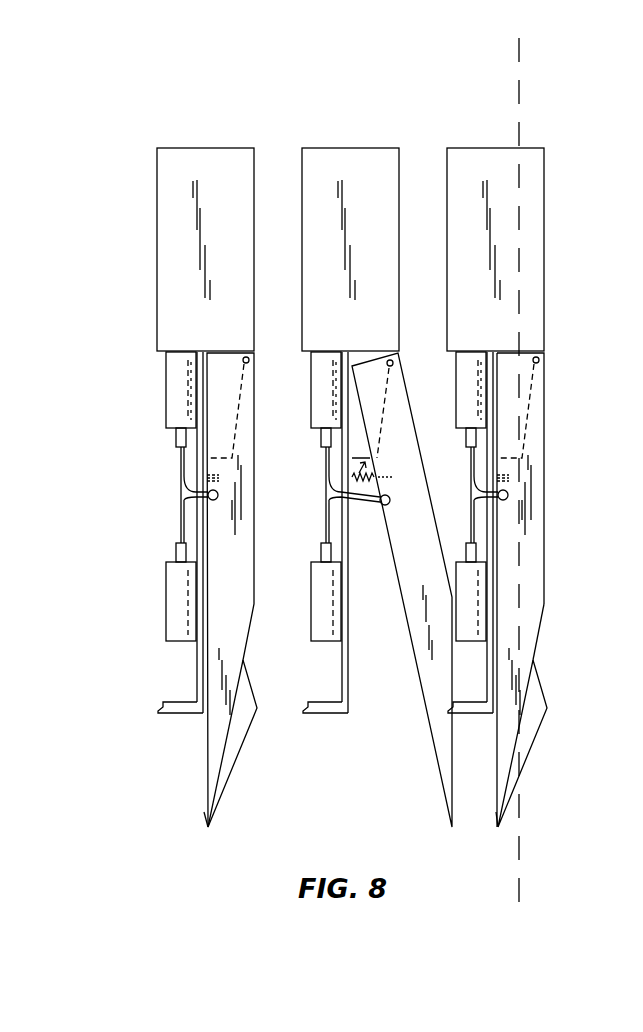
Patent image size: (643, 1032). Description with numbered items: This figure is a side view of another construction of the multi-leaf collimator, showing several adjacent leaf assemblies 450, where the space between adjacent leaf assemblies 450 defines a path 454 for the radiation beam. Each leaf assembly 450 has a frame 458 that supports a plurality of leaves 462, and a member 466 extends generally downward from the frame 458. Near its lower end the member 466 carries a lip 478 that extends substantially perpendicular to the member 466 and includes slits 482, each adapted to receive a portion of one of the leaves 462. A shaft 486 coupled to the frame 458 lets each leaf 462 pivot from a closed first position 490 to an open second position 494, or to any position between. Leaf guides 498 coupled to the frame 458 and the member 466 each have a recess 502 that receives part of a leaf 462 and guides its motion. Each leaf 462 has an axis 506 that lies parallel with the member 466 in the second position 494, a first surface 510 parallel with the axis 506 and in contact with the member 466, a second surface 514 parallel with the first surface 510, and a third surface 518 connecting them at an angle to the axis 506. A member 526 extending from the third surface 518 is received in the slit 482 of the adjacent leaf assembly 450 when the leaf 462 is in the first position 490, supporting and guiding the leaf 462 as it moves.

The leaf assembly 450 is at (359, 118).
The path 454 is at (284, 149).
The frame 458 is at (176, 163).
The leaf 462 is at (245, 523).
The member 466 is at (205, 660).
The lip 478 is at (165, 707).
The slit 482 is at (483, 724).
The shaft 486 is at (540, 363).
The first position 490 is at (452, 856).
The second position 494 is at (213, 854).
The leaf guide 498 is at (354, 442).
The recess 502 is at (352, 480).
The axis 506 is at (519, 53).
The first surface 510 is at (407, 626).
The second surface 514 is at (545, 510).
The third surface 518 is at (543, 627).
The member 526 is at (535, 712).